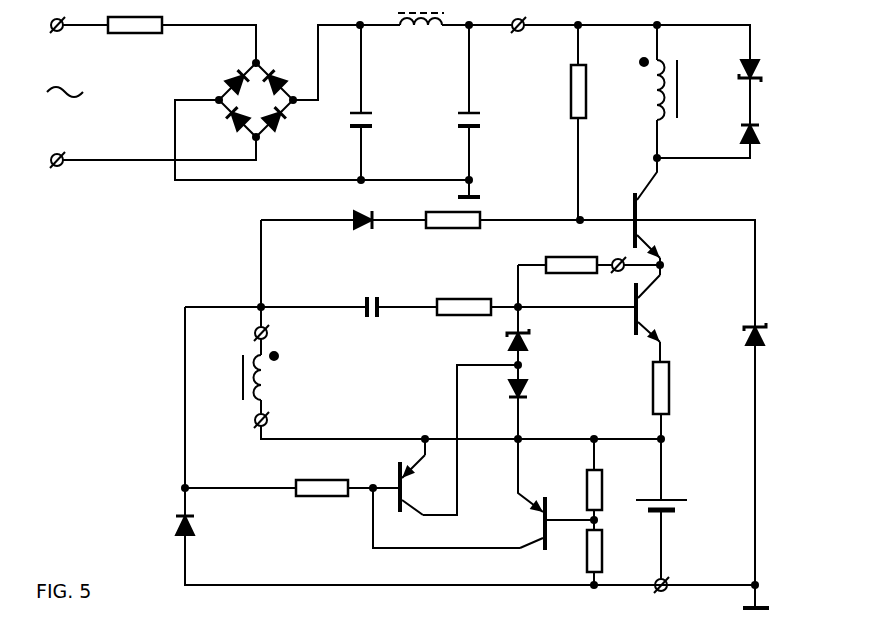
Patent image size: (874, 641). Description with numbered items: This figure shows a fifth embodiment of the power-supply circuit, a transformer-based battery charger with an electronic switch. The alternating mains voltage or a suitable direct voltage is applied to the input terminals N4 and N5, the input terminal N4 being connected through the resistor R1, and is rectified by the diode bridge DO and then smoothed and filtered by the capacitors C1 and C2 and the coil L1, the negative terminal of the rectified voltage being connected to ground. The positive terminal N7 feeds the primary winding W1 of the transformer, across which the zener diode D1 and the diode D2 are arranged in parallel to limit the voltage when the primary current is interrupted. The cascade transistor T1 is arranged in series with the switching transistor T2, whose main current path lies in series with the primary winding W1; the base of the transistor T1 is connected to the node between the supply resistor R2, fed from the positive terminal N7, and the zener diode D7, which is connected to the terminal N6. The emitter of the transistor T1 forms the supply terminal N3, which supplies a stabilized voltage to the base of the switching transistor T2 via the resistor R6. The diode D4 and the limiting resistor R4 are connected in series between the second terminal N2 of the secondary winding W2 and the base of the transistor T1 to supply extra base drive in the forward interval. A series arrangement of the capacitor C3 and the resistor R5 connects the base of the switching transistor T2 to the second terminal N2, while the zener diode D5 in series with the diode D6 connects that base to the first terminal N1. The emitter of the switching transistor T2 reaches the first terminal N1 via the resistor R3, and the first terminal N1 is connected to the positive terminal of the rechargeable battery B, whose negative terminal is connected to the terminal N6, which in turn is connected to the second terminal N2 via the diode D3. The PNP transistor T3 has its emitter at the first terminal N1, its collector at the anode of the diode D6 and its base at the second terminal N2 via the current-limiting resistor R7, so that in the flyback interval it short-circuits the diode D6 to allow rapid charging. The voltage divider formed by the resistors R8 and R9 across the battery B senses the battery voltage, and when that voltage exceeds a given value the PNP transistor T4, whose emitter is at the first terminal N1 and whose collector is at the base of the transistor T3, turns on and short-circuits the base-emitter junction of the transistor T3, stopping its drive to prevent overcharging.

The input terminal N4 is at (55, 39).
The resistor R1 is at (135, 39).
The input terminal N5 is at (55, 174).
The diode bridge DO is at (256, 100).
The capacitor C1 is at (376, 121).
The coil L1 is at (421, 32).
The capacitor C2 is at (484, 121).
The positive terminal N7 is at (519, 36).
The supply resistor R2 is at (595, 91).
The primary winding W1 is at (676, 89).
The zener diode D1 is at (767, 68).
The diode D2 is at (768, 130).
The cascade transistor T1 is at (660, 208).
The diode D4 is at (343, 233).
The limiting resistor R4 is at (503, 234).
The supply terminal N3 is at (613, 252).
The resistor R6 is at (557, 278).
The second terminal N2 is at (277, 327).
The capacitor C3 is at (372, 320).
The resistor R5 is at (464, 321).
The switching transistor T2 is at (662, 308).
The zener diode D5 is at (536, 340).
The secondary winding W2 is at (275, 376).
The diode D6 is at (537, 391).
The resistor R3 is at (676, 388).
The zener diode D7 is at (772, 336).
The first terminal N1 is at (278, 421).
The transistor T3 is at (426, 485).
The current-limiting resistor R7 is at (322, 501).
The transistor T4 is at (512, 494).
The resistor R8 is at (609, 489).
The diode D3 is at (202, 525).
The rechargeable battery B is at (672, 501).
The resistor R9 is at (609, 551).
The terminal N6 is at (676, 573).